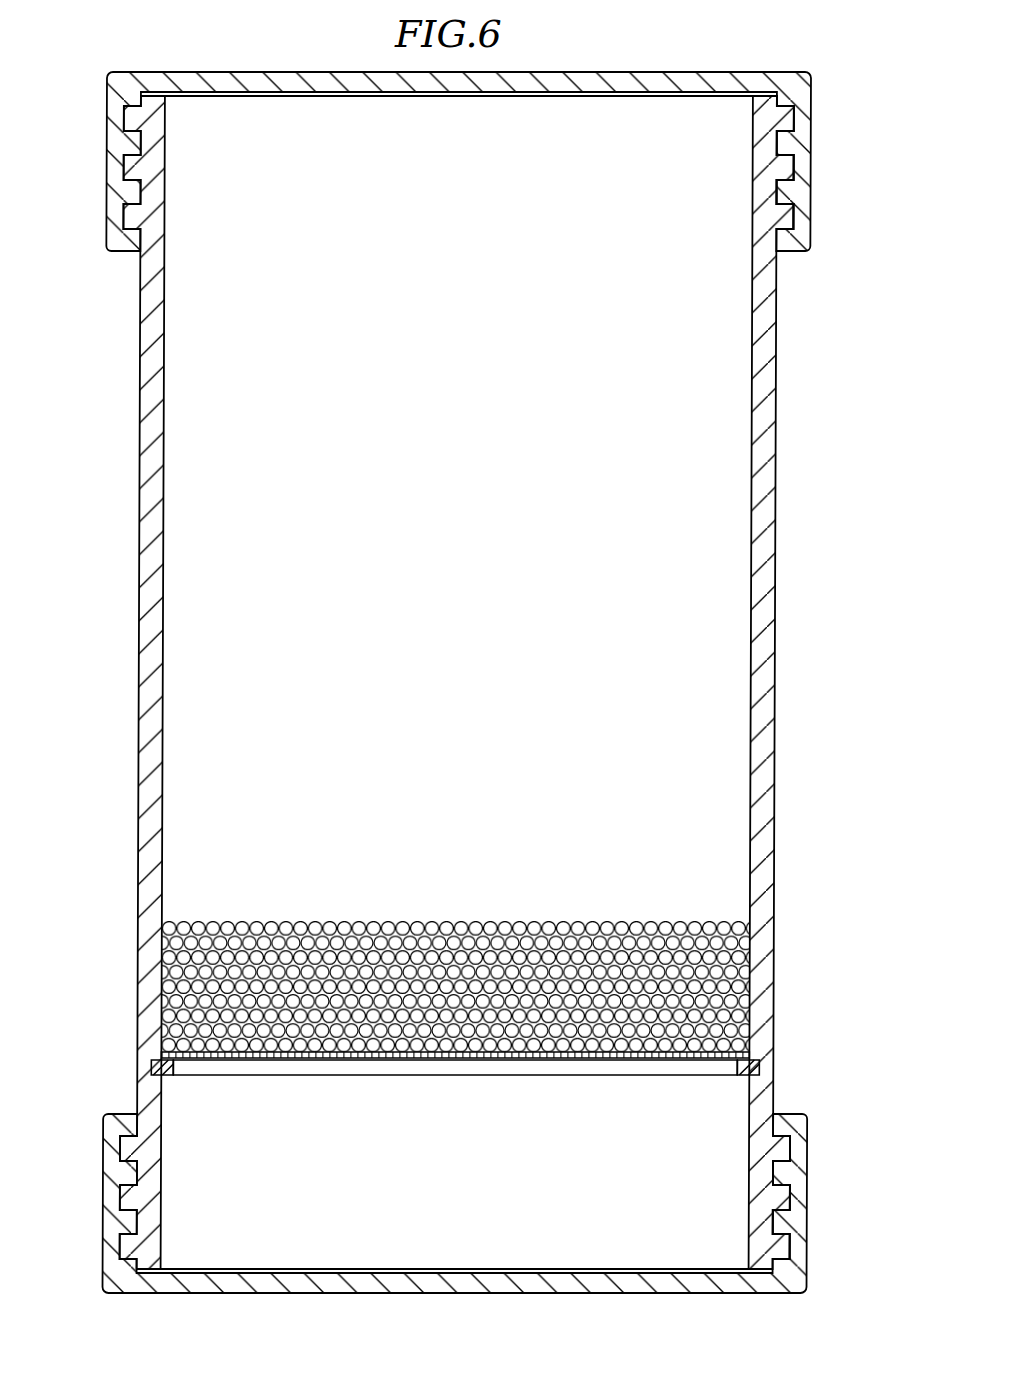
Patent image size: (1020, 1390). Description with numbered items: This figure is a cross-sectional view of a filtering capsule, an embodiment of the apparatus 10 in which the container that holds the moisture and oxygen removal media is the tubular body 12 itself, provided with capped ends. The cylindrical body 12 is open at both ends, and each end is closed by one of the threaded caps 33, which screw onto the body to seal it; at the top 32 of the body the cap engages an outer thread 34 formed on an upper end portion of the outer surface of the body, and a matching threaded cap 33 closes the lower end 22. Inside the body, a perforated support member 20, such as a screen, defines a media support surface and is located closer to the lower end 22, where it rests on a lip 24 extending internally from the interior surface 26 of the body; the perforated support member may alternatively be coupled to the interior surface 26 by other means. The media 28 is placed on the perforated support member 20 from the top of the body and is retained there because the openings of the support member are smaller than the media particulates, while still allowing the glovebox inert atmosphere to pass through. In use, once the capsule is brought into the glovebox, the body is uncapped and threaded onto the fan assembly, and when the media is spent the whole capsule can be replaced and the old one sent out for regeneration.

The apparatus 10 is at (785, 572).
The tubular body 12 is at (775, 442).
The perforated support member 20 is at (692, 1062).
The lower end 22 is at (763, 1248).
The lip 24 is at (155, 1068).
The interior surface 26 is at (752, 877).
The media 28 is at (698, 967).
The top 32 is at (770, 125).
The threaded caps 33 is at (657, 90).
The outer thread 34 is at (795, 168).